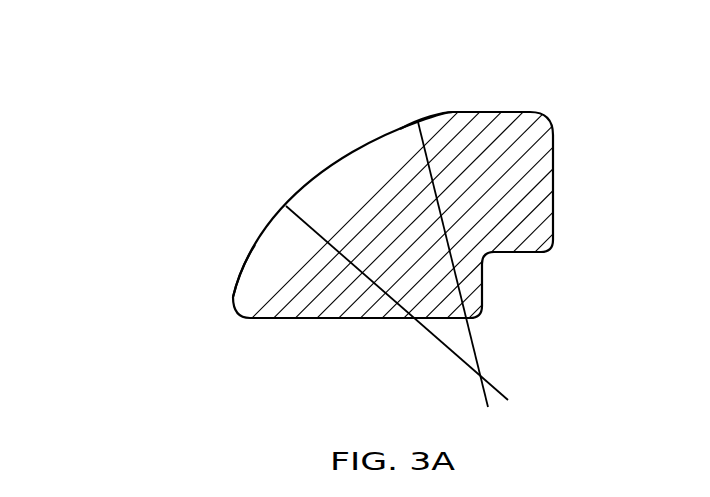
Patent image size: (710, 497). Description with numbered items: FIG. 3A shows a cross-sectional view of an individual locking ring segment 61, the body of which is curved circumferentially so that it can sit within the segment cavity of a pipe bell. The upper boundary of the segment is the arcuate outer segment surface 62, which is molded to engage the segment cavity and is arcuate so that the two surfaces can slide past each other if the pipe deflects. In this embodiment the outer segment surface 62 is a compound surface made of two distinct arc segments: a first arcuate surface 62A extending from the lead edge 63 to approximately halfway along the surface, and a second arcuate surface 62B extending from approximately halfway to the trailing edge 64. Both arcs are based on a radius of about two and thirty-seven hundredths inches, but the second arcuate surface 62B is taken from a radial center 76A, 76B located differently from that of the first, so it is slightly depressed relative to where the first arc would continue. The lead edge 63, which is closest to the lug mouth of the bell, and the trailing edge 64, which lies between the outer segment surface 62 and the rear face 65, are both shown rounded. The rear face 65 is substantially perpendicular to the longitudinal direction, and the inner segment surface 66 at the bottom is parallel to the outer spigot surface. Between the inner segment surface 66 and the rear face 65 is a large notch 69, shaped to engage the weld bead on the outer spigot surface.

The locking ring segment 61 is at (308, 125).
The outer segment surface 62 is at (308, 187).
The first arcuate surface 62A is at (258, 245).
The second arcuate surface 62B is at (420, 122).
The lead edge 63 is at (235, 315).
The trailing edge 64 is at (553, 122).
The rear face 65 is at (553, 178).
The inner segment surface 66 is at (352, 318).
The large notch 69 is at (487, 258).
The radial center 76A is at (419, 312).
The radial center 76B is at (461, 283).